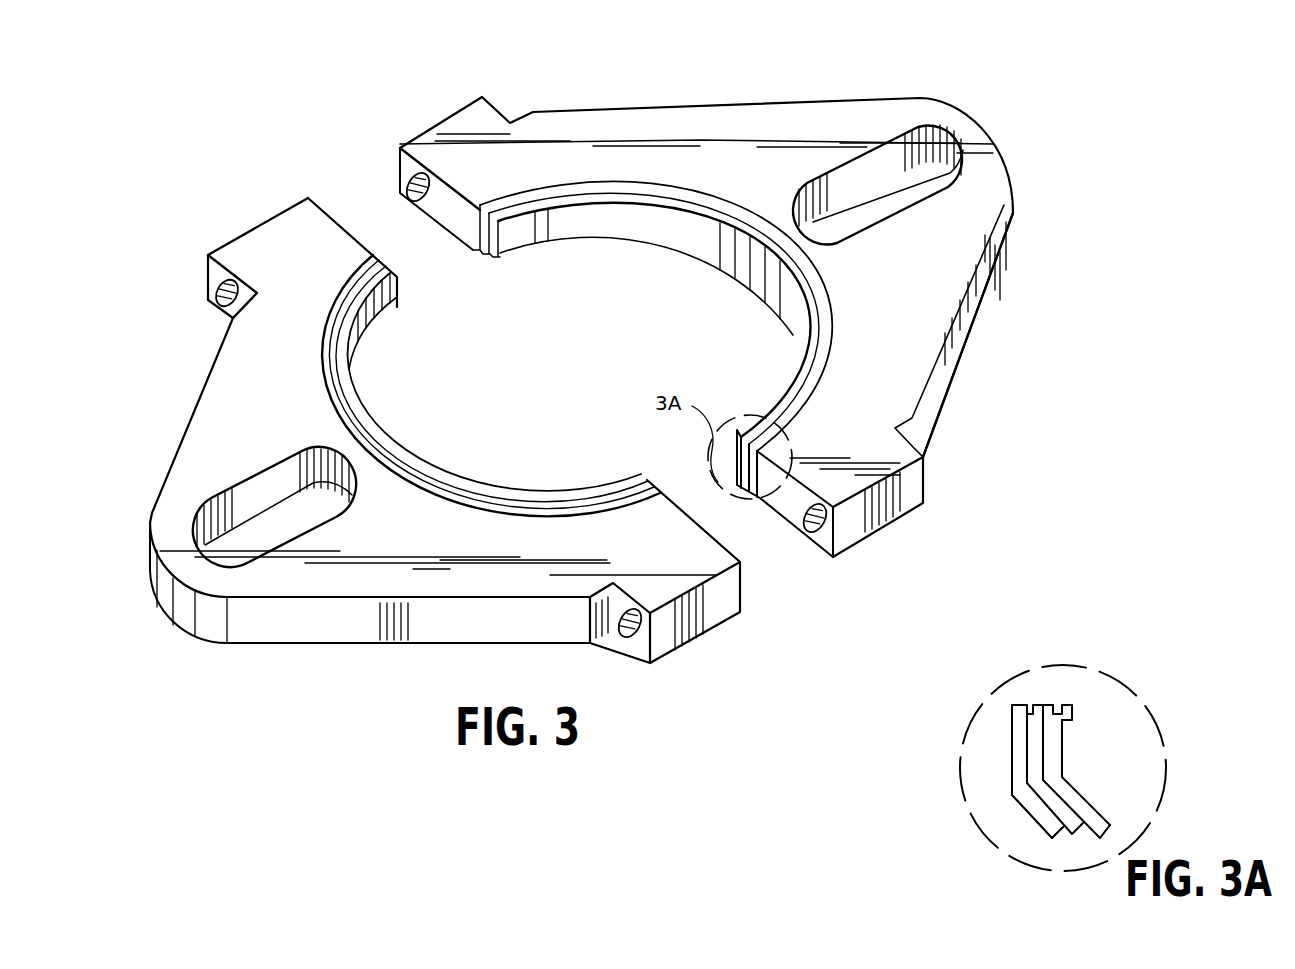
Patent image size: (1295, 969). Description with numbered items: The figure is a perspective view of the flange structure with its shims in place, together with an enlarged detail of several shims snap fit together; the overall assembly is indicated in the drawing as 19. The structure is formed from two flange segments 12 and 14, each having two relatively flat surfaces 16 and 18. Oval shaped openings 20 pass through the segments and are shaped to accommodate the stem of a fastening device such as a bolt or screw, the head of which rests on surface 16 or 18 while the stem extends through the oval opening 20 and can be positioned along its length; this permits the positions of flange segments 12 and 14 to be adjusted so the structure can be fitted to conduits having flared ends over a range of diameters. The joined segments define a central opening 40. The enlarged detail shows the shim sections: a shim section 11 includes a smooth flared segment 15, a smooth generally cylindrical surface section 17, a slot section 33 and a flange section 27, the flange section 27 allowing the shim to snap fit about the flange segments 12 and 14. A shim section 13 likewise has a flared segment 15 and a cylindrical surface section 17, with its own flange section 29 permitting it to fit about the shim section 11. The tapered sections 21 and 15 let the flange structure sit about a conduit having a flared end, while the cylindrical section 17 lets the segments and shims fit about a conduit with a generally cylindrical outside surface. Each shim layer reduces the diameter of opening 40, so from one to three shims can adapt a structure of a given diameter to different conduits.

In FIG. 3, the clamp ring assembly 19 is at (867, 70).
In FIG. 3, the flange segment 12 is at (684, 118).
In FIG. 3, the flange segment 14 is at (225, 390).
In FIG. 3, the flat surface 16 is at (740, 175).
In FIG. 3, the flat surface 18 is at (945, 397).
In FIG. 3, the oval shaped opening 20 is at (923, 180).
In FIG. 3, the opening 40 is at (585, 353).
In FIG. 3A, the shim section 11 is at (1053, 762).
In FIG. 3A, the shim section 13 is at (1018, 732).
In FIG. 3A, the flared segment 15 is at (1030, 818).
In FIG. 3A, the cylindrical surface section 17 is at (1030, 745).
In FIG. 3A, the tapered section 21 is at (1100, 838).
In FIG. 3A, the flange section 27 is at (1064, 712).
In FIG. 3A, the flange section 29 is at (1024, 713).
In FIG. 3A, the slot section 33 is at (1042, 705).